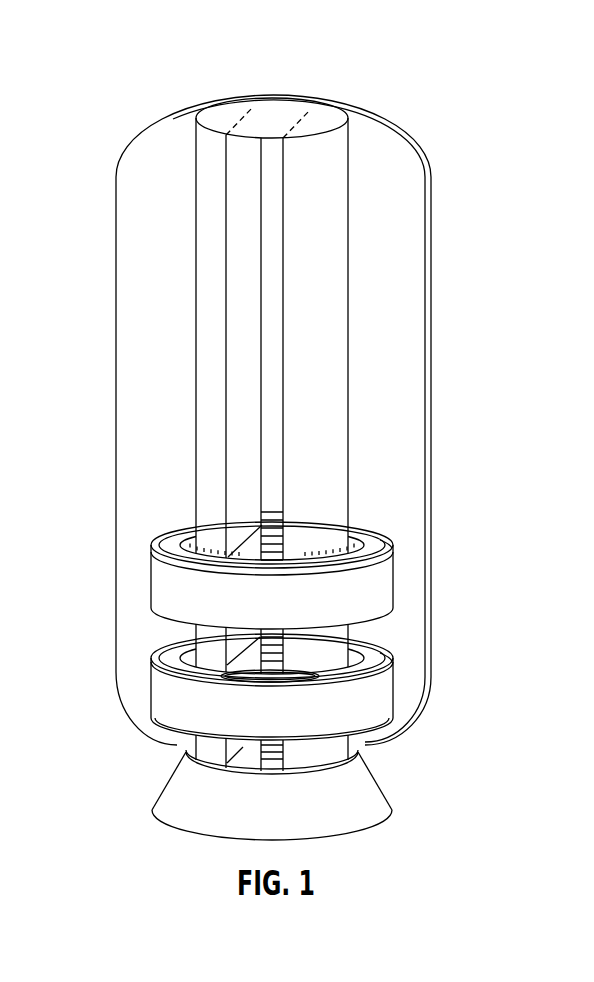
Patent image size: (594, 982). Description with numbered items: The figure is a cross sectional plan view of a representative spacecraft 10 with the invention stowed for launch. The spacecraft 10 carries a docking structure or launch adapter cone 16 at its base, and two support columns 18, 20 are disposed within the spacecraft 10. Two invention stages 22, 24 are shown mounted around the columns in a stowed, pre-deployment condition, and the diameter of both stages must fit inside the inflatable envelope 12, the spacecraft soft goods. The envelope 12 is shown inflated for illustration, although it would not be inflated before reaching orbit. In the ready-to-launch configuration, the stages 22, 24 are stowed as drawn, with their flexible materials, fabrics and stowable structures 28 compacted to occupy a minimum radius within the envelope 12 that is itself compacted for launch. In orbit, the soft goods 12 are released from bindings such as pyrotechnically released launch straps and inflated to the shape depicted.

The spacecraft 10 is at (109, 78).
The inflatable envelope 12 is at (407, 138).
The launch adapter cone 16 is at (358, 798).
The support column 18 is at (237, 302).
The support column 20 is at (322, 309).
The invention stage 22 is at (157, 577).
The invention stage 24 is at (383, 690).
The stowable structures 28 is at (388, 543).